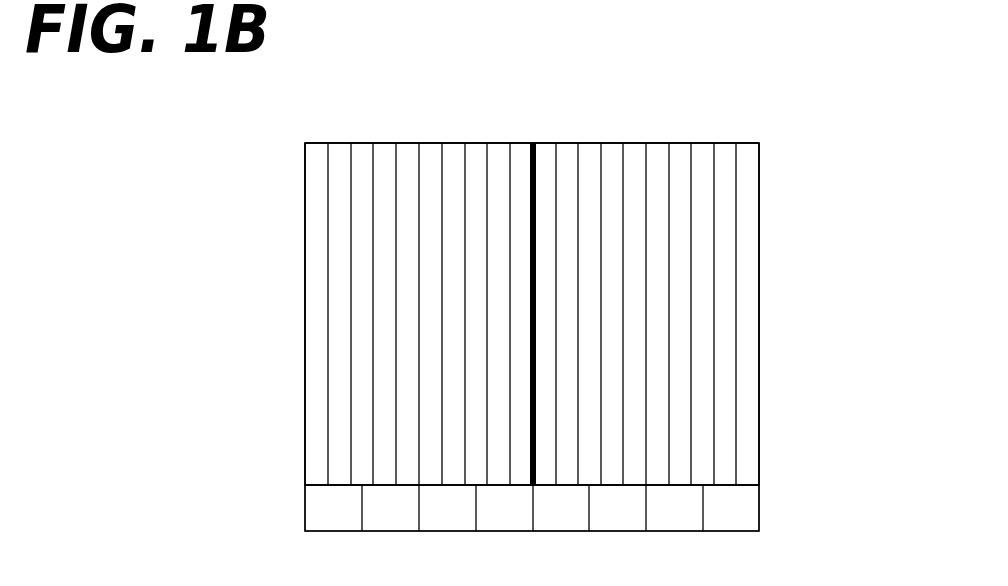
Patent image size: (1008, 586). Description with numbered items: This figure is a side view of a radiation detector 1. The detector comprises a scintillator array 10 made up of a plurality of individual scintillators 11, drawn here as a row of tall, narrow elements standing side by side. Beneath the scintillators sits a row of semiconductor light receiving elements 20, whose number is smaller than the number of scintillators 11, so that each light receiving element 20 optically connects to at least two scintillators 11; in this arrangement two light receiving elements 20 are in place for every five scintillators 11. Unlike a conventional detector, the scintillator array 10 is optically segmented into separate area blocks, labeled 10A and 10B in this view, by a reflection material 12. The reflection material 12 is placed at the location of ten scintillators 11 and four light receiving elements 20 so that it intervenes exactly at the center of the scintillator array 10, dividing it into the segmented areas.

The radiation detector 1 is at (117, 110).
The scintillator array 10 is at (701, 143).
The area block 10A is at (759, 143).
The area block 10B is at (305, 143).
The scintillator 11 is at (313, 243).
The reflection material 12 is at (530, 158).
The semiconductor light receiving element 20 is at (315, 513).